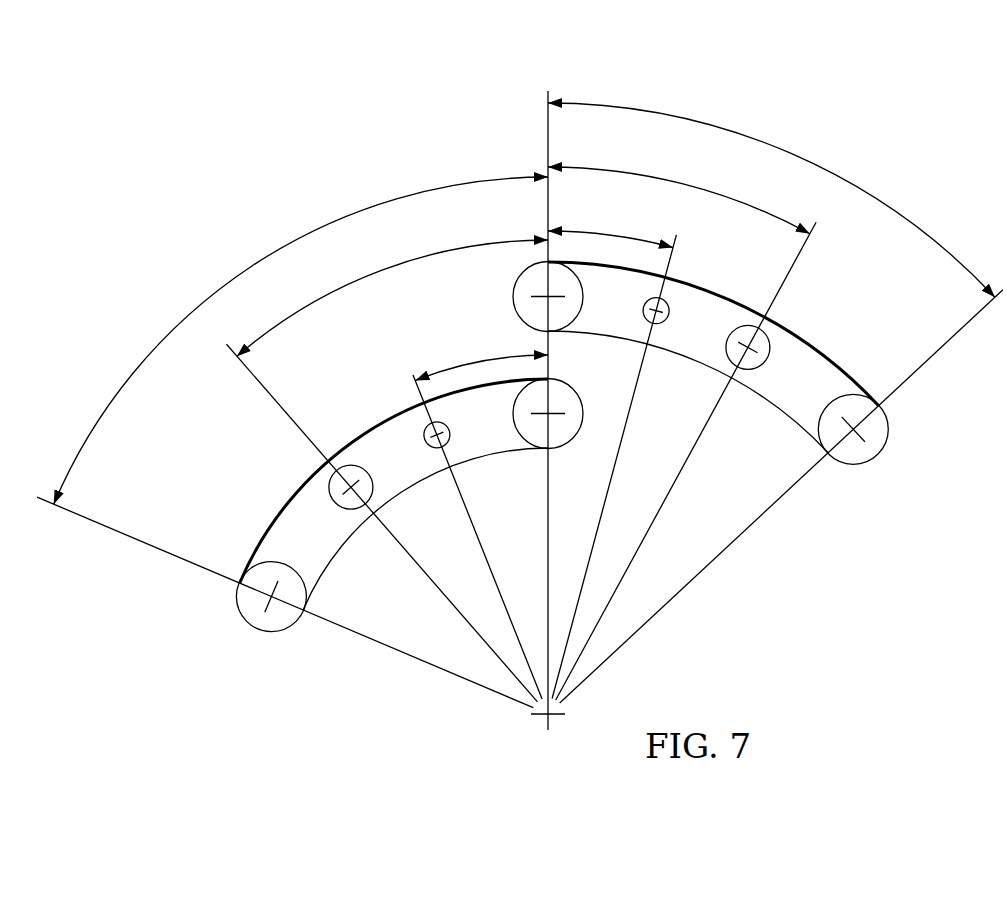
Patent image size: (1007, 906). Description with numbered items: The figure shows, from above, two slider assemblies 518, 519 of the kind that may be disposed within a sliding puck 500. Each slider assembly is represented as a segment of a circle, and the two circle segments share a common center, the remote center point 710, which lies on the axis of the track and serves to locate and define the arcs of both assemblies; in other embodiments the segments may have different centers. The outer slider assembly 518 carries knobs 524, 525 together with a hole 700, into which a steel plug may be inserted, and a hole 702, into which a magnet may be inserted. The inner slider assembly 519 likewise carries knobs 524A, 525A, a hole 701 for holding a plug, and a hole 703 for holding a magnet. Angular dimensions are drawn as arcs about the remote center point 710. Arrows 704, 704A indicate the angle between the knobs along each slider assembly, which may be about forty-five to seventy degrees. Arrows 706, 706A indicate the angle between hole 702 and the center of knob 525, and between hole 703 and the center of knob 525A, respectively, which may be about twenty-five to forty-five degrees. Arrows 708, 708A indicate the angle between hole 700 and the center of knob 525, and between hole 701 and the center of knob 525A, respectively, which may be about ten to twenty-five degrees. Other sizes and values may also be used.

The sliding puck 500 is at (384, 106).
The slider assembly 518 is at (728, 293).
The slider assembly 519 is at (290, 495).
The knob 524 is at (840, 396).
The knob 524A is at (298, 572).
The knob 525 is at (576, 322).
The knob 525A is at (521, 441).
The hole 700 is at (659, 325).
The hole 701 is at (426, 426).
The hole 702 is at (751, 371).
The hole 703 is at (337, 503).
The arrow 704 is at (790, 153).
The arrow 704A is at (252, 266).
The arrow 706 is at (683, 184).
The arrow 706A is at (384, 269).
The arrow 708 is at (615, 235).
The arrow 708A is at (480, 361).
The remote center point 710 is at (545, 720).